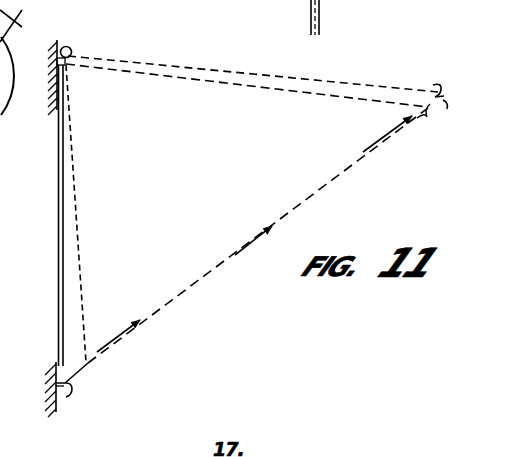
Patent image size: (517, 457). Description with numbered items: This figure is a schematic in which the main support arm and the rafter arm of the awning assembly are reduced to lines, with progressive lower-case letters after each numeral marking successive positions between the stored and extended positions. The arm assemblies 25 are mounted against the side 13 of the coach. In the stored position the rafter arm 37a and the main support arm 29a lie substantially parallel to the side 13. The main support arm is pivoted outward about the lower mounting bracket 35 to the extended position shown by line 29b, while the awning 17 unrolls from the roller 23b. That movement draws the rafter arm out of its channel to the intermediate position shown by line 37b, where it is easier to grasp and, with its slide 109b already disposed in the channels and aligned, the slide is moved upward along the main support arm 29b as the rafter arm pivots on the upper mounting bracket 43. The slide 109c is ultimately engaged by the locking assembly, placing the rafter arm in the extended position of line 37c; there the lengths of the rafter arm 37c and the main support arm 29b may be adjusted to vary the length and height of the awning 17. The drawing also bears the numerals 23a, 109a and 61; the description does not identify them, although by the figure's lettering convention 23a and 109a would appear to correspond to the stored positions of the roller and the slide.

The side of the coach 13 is at (55, 412).
The awning 17 is at (234, 76).
The pivot joint 23a is at (72, 50).
The roller 23b is at (424, 84).
The arm assembly 25 is at (240, 262).
The main support arm in stored position 29a is at (73, 264).
The main support arm in extended position 29b is at (182, 292).
The lower mounting bracket 35 is at (68, 396).
The rafter arm in stored position 37a is at (62, 262).
The rafter arm in intermediate position 37b is at (74, 210).
The rafter arm in extended position 37c is at (194, 81).
The upper mounting bracket 43 is at (57, 62).
The frame member 61 is at (6, 50).
The cylinder first position 109a is at (57, 362).
The slide in intermediate position 109b is at (80, 364).
The slide in extended position 109c is at (424, 108).